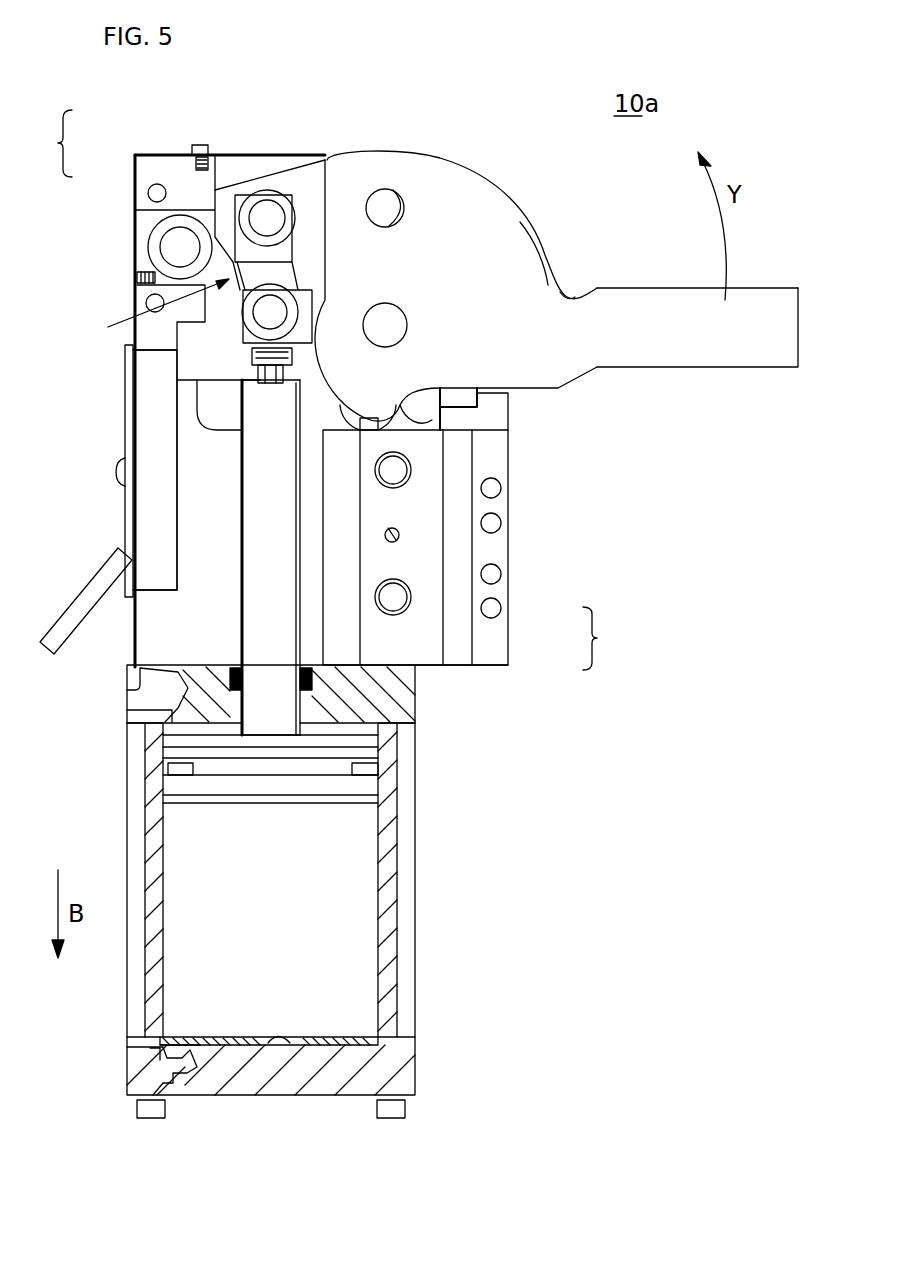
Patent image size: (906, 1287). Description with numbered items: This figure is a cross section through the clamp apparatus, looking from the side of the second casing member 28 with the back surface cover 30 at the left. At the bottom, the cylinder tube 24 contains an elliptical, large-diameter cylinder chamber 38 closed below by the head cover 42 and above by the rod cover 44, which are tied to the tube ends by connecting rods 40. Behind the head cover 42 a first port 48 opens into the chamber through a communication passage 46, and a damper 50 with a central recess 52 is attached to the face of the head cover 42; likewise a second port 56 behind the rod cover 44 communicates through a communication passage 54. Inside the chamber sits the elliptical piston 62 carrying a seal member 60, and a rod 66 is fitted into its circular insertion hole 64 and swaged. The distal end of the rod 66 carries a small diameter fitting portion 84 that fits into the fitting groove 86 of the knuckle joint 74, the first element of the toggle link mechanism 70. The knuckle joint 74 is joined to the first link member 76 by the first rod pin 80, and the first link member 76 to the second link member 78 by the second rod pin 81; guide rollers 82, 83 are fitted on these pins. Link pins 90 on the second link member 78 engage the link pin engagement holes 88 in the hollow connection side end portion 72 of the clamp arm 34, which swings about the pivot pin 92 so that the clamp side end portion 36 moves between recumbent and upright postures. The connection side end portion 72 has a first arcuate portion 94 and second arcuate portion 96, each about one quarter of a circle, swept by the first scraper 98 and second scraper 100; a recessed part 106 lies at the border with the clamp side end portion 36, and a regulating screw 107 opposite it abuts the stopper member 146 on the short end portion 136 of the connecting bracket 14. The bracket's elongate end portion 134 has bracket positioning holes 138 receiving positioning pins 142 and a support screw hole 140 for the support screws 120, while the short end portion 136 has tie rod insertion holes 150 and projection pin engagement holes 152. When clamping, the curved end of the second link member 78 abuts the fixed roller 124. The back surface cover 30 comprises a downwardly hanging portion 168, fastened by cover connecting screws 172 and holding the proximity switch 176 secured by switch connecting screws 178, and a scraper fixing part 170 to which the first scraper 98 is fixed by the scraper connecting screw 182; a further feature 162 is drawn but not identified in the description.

The connecting bracket 14 is at (609, 638).
The cylinder tube 24 is at (407, 900).
The second casing member 28 is at (150, 635).
The back surface cover 30 is at (49, 143).
The clamp arm 34 is at (680, 284).
The clamp side end portion 36 is at (778, 298).
The cylinder chamber 38 is at (375, 880).
The connecting rods 40 is at (153, 1119).
The head cover 42 is at (400, 1085).
The rod cover 44 is at (400, 700).
The communication passage 46 is at (208, 1048).
The first port 48 is at (147, 1083).
The damper 50 is at (338, 1037).
The recess 52 is at (276, 1045).
The communication passage 54 is at (150, 715).
The second port 56 is at (132, 690).
The seal member 60 is at (345, 752).
The piston 62 is at (377, 787).
The circular insertion hole 64 is at (262, 722).
The rod 66 is at (258, 565).
The toggle link mechanism 70 is at (150, 315).
The connection side end portion 72 is at (482, 183).
The knuckle joint 74 is at (187, 343).
The first link member 76 is at (290, 270).
The second link member 78 is at (300, 190).
The first rod pin 80 is at (275, 318).
The second rod pin 81 is at (267, 216).
The guide roller 82 is at (300, 305).
The guide roller 83 is at (295, 215).
The small diameter fitting portion 84 is at (270, 380).
The fitting groove 86 is at (263, 372).
The link pin engagement holes 88 is at (405, 205).
The link pins 90 is at (390, 223).
The pivot pin 92 is at (392, 330).
The first arcuate portion 94 is at (530, 212).
The second arcuate portion 96 is at (303, 403).
The first scraper 98 is at (240, 153).
The second scraper 100 is at (392, 400).
The recessed part 106 is at (570, 298).
The regulating screw 107 is at (487, 388).
The support screws 120 is at (402, 528).
The fixed roller 124 is at (148, 246).
The elongate end portion 134 is at (430, 640).
The short end portion 136 is at (492, 636).
The bracket positioning holes 138 is at (380, 478).
The support screw hole 140 is at (385, 535).
The positioning pins 142 is at (377, 455).
The stopper member 146 is at (502, 418).
The tie rod insertion holes 150 is at (494, 490).
The projection pin engagement holes 152 is at (494, 523).
The hole 162 is at (158, 188).
The downwardly hanging portion 168 is at (133, 167).
The scraper fixing part 170 is at (152, 155).
The cover connecting screws 172 is at (137, 275).
The proximity switch 176 is at (128, 425).
The switch connecting screws 178 is at (117, 472).
The scraper connecting screw 182 is at (200, 143).